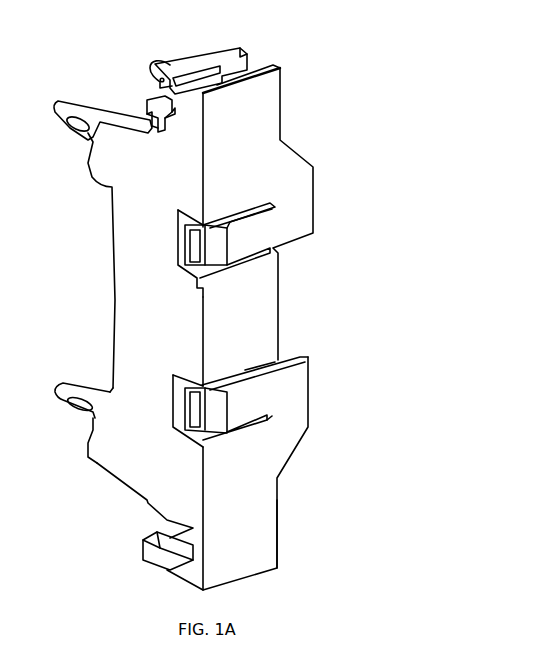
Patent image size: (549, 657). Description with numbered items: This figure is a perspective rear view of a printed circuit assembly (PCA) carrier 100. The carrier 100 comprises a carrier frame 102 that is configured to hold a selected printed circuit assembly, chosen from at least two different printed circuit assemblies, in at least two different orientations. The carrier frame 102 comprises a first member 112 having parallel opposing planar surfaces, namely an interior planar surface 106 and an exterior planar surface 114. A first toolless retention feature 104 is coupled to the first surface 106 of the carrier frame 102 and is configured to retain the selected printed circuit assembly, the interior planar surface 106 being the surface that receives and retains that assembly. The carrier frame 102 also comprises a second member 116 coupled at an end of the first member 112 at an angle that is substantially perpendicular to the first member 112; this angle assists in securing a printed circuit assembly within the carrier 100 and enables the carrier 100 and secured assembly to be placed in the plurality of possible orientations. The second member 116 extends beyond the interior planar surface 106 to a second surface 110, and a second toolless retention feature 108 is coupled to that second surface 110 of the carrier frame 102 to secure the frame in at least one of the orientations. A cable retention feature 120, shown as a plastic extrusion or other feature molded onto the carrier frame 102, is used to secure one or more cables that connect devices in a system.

The printed circuit assembly (PCA) carrier 100 is at (442, 190).
The carrier frame 102 is at (262, 312).
The first toolless retention feature 104 is at (145, 70).
The first surface 106 is at (198, 62).
The second toolless retention feature 108 is at (63, 127).
The second surface 110 is at (113, 277).
The first member 112 is at (263, 453).
The exterior planar surface 114 is at (263, 520).
The second member 116 is at (127, 472).
The cable retention feature 120 is at (145, 100).